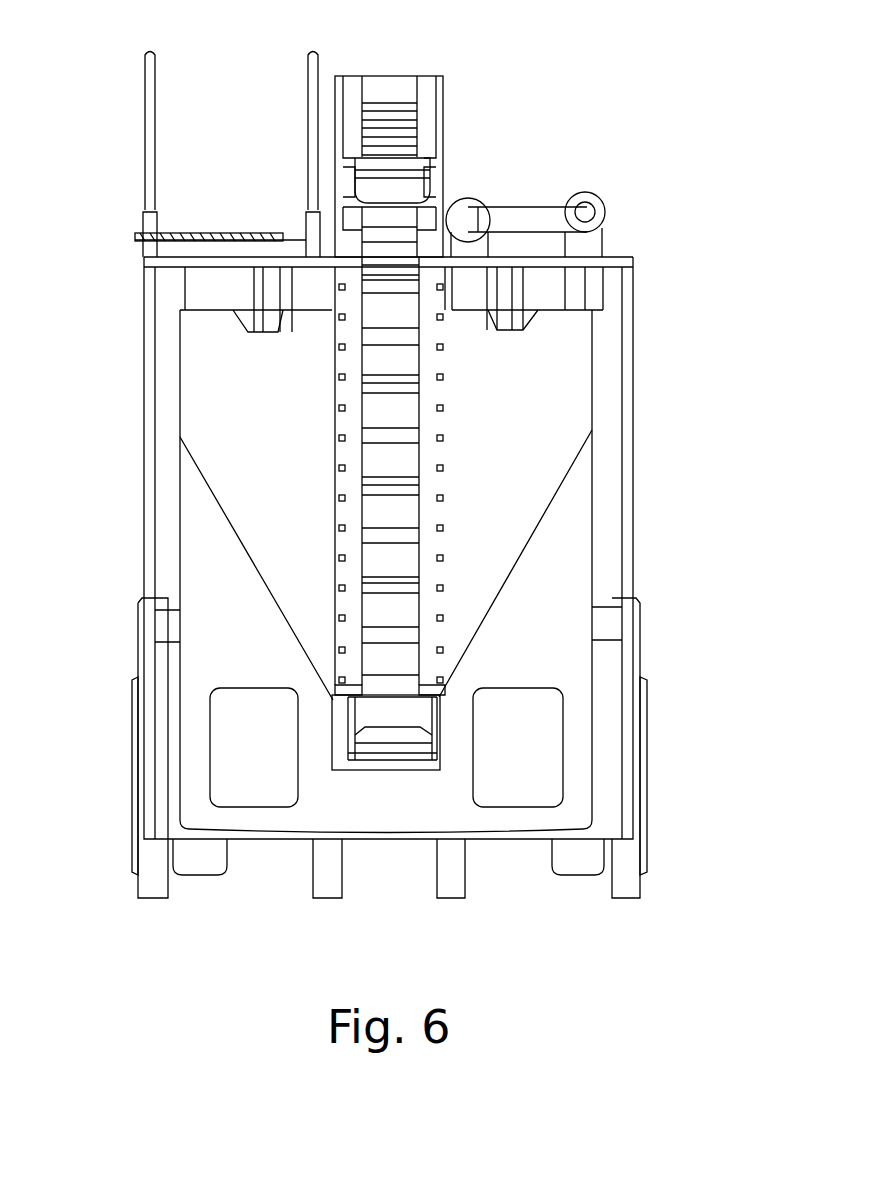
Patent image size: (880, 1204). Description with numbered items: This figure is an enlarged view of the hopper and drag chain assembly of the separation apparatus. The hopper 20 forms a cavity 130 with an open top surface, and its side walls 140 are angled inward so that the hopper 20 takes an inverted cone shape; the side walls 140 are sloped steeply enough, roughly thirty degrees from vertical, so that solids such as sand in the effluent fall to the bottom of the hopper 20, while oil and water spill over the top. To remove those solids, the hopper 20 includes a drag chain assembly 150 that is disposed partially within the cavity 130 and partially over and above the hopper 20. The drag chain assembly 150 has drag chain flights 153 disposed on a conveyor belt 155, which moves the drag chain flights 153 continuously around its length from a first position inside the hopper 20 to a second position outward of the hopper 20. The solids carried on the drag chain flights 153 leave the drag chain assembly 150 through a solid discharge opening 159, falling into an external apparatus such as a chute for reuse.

The hopper 20 is at (180, 342).
The cavity 130 is at (503, 418).
The side walls 140 is at (237, 545).
The drag chain assembly 150 is at (375, 335).
The drag chain flights 153 is at (378, 440).
The conveyor belt 155 is at (345, 612).
The solid discharge opening 159 is at (380, 125).